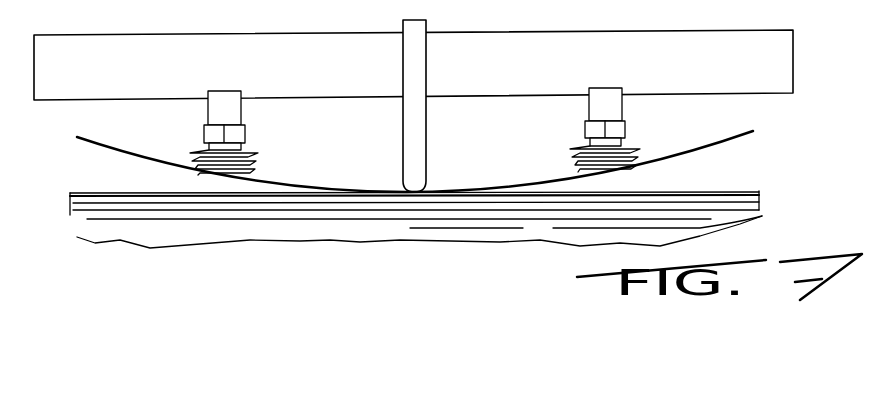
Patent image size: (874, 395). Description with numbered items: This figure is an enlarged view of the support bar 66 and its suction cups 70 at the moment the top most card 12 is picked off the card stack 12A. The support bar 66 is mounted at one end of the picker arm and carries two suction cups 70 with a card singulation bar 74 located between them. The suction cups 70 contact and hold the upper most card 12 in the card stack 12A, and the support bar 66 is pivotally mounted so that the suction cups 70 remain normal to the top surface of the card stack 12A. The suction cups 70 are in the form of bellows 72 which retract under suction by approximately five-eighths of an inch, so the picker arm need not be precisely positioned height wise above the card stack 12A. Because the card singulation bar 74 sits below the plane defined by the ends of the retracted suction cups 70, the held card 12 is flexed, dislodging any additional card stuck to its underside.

The support bar 66 is at (753, 68).
The card singulation bar 74 is at (415, 133).
The card 12 is at (715, 143).
The bellows 72 is at (258, 158).
The suction cups 70 is at (250, 144).
The card stack 12A is at (233, 236).